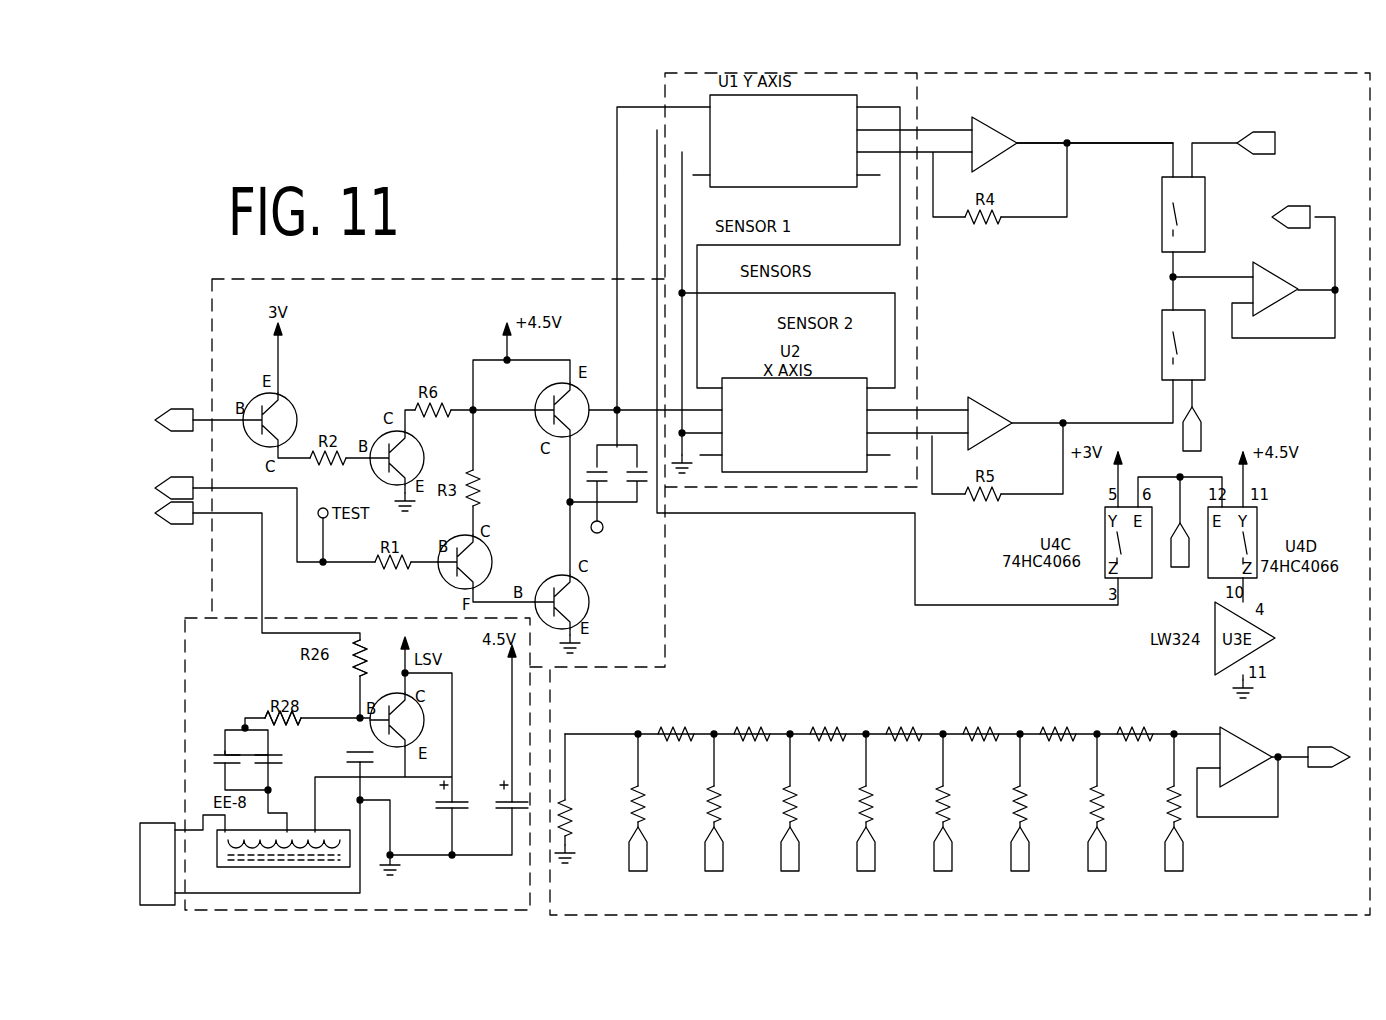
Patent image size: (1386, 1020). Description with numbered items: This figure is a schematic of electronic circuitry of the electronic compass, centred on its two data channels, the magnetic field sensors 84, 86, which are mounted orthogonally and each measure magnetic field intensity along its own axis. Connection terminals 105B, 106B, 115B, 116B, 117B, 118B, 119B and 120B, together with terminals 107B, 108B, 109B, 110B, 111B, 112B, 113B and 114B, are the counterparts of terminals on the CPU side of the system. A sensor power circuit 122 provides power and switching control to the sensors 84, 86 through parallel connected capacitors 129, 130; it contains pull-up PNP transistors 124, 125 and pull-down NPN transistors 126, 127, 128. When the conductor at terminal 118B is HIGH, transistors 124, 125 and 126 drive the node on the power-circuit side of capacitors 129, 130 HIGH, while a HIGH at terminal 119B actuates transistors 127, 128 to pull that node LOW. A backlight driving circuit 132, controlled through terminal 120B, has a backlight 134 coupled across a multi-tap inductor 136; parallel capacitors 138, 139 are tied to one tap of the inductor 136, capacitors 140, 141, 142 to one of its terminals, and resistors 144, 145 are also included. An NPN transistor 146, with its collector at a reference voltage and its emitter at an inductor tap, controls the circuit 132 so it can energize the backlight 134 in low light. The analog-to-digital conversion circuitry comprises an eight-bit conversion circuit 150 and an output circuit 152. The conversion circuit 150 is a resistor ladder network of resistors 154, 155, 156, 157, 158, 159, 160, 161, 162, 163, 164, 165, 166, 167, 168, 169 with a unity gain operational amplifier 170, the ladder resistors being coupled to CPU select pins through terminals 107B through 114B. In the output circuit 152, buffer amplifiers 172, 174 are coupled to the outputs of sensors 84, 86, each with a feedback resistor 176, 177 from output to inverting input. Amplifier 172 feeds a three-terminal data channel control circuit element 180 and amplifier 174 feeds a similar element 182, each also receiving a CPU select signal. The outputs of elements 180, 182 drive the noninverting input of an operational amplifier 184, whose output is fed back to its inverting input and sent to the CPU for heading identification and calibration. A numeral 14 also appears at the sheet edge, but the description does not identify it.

The system 14 is at (1382, 150).
The magnetic field sensor 84 is at (838, 95).
The magnetic field sensor 86 is at (742, 378).
The connection terminal 105B is at (1291, 206).
The connection terminal 106B is at (1340, 768).
The connection terminal 107B is at (859, 840).
The connection terminal 108B is at (783, 840).
The connection terminal 109B is at (706, 840).
The connection terminal 110B is at (628, 858).
The connection terminal 111B is at (1166, 840).
The connection terminal 112B is at (1091, 840).
The connection terminal 113B is at (1013, 840).
The connection terminal 114B is at (936, 840).
The connection terminal 115B is at (1172, 556).
The connection terminal 116B is at (1201, 422).
The connection terminal 117B is at (1264, 136).
The connection terminal 118B is at (166, 408).
The connection terminal 119B is at (166, 478).
The connection terminal 120B is at (162, 523).
The sensor power circuit 122 is at (330, 278).
The pull-up PNP transistor 124 is at (290, 402).
The pull-up PNP transistor 125 is at (548, 383).
The pull-down NPN transistor 126 is at (378, 439).
The pull-down NPN transistor 127 is at (460, 538).
The pull-down NPN transistor 128 is at (552, 586).
The capacitor 129 is at (586, 480).
The capacitor 130 is at (647, 482).
The backlight driving circuit 132 is at (185, 650).
The backlight 134 is at (160, 823).
The multi-tap inductor 136 is at (395, 860).
The capacitor 138 is at (214, 765).
The capacitor 139 is at (280, 763).
The capacitor 140 is at (349, 763).
The capacitor 141 is at (437, 804).
The capacitor 142 is at (494, 813).
The resistor 144 is at (368, 666).
The resistor 145 is at (274, 716).
The NPN transistor 146 is at (384, 707).
The eight-bit conversion circuit 150 is at (1275, 850).
The output circuit 152 is at (1150, 134).
The resistor 154 is at (572, 828).
The resistor 155 is at (641, 788).
The resistor 156 is at (656, 726).
The resistor 157 is at (718, 788).
The resistor 158 is at (733, 730).
The resistor 159 is at (794, 788).
The resistor 160 is at (811, 730).
The resistor 161 is at (871, 788).
The resistor 162 is at (888, 730).
The resistor 163 is at (948, 788).
The resistor 164 is at (965, 730).
The resistor 165 is at (1025, 788).
The resistor 166 is at (1042, 730).
The resistor 167 is at (1101, 788).
The resistor 168 is at (1119, 730).
The resistor 169 is at (1181, 814).
The unity gain operational amplifier 170 is at (1250, 732).
The output buffer amplifier 172 is at (999, 124).
The output buffer amplifier 174 is at (996, 397).
The feedback resistor 176 is at (988, 226).
The feedback resistor 177 is at (994, 498).
The data channel control circuit element 180 is at (1162, 200).
The data channel control circuit element 182 is at (1160, 320).
The operational amplifier 184 is at (1273, 270).